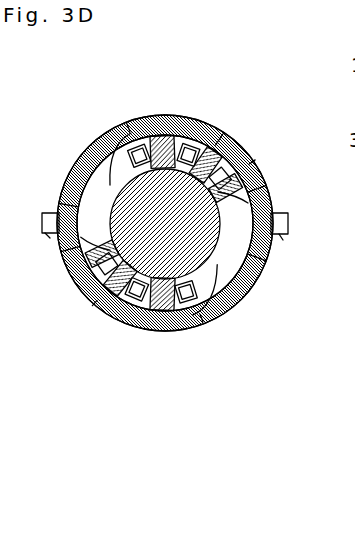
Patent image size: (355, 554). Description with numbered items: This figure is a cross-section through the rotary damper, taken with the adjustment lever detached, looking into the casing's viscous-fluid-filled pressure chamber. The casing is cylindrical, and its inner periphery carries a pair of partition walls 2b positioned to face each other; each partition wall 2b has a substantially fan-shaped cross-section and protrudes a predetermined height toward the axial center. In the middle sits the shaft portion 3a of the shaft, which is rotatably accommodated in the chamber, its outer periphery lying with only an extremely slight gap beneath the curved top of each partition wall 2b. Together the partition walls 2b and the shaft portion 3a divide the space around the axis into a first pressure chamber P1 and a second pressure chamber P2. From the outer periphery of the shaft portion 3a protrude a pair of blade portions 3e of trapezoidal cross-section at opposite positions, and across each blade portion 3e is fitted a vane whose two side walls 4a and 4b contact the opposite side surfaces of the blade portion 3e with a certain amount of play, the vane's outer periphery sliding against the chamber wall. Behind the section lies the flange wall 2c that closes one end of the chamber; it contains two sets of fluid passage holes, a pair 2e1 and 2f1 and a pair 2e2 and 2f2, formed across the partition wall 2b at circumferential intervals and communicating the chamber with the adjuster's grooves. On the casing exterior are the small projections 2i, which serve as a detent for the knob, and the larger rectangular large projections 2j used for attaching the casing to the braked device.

The partition wall 2b is at (167, 115).
The flange wall 2c is at (227, 252).
The fluid passage hole 2e1 is at (185, 115).
The fluid passage hole 2e2 is at (128, 322).
The fluid passage hole 2f1 is at (138, 125).
The fluid passage hole 2f2 is at (222, 273).
The small projection 2i is at (63, 184).
The large projection 2j is at (45, 233).
The shaft portion 3a is at (112, 137).
The blade portion 3e is at (242, 150).
The side wall 4a is at (222, 130).
The side wall 4b is at (45, 213).
The first pressure chamber P1 is at (228, 313).
The second pressure chamber P2 is at (100, 188).